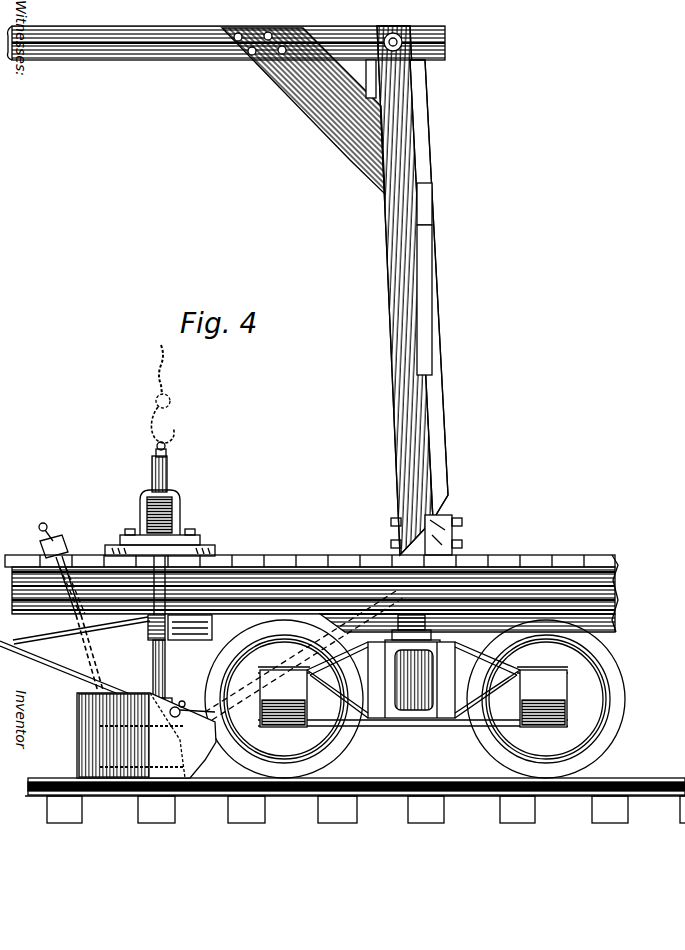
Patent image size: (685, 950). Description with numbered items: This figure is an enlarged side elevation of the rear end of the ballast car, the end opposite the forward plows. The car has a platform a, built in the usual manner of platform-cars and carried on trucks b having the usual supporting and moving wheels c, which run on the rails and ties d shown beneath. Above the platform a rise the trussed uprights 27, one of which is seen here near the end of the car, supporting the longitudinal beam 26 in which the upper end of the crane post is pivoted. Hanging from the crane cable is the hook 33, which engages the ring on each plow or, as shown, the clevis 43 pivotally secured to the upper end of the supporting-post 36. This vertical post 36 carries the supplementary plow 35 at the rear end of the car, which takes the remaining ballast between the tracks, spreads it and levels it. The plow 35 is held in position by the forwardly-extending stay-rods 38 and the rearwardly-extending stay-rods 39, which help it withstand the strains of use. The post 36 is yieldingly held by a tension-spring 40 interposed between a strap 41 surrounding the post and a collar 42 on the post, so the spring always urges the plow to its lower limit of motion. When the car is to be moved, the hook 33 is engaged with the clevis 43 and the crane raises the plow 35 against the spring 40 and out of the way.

The longitudinal beam 26 is at (176, 62).
The trussed upright 27 is at (418, 283).
The hook 33 is at (176, 416).
The supplementary plow 35 is at (146, 735).
The supporting-post 36 is at (170, 484).
The forwardly-extending stay-rods 38 is at (61, 673).
The rearwardly-extending stay-rods 39 is at (207, 706).
The tension-spring 40 is at (145, 508).
The strap 41 is at (181, 513).
The collar 42 is at (126, 535).
The clevis 43 is at (157, 450).
The platform a is at (540, 583).
The trucks b is at (421, 719).
The wheels c is at (318, 740).
The ties d is at (355, 803).